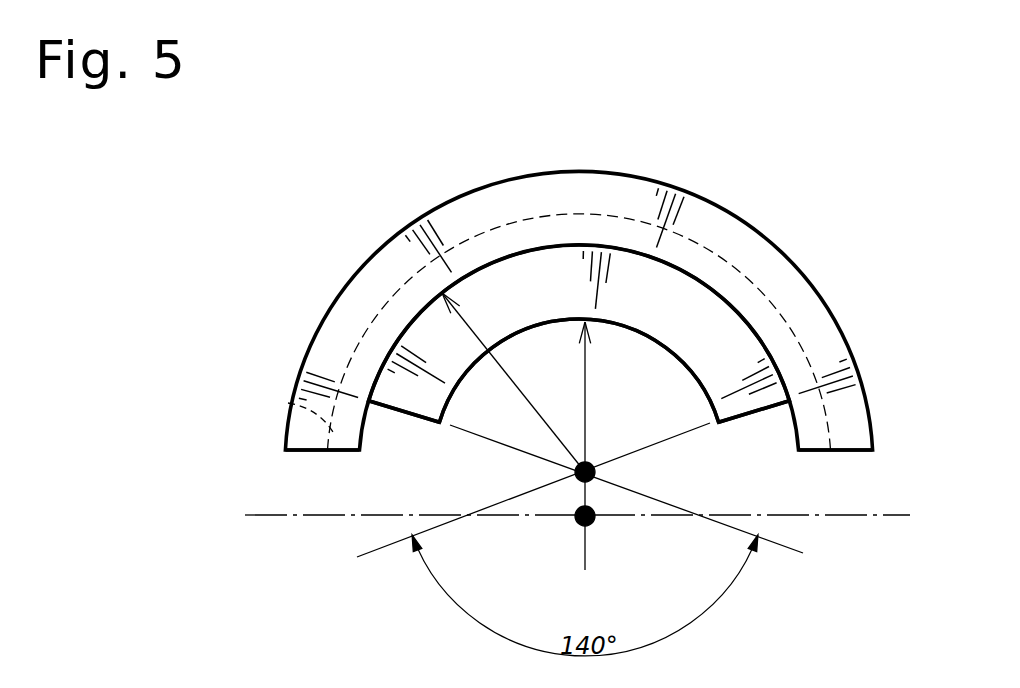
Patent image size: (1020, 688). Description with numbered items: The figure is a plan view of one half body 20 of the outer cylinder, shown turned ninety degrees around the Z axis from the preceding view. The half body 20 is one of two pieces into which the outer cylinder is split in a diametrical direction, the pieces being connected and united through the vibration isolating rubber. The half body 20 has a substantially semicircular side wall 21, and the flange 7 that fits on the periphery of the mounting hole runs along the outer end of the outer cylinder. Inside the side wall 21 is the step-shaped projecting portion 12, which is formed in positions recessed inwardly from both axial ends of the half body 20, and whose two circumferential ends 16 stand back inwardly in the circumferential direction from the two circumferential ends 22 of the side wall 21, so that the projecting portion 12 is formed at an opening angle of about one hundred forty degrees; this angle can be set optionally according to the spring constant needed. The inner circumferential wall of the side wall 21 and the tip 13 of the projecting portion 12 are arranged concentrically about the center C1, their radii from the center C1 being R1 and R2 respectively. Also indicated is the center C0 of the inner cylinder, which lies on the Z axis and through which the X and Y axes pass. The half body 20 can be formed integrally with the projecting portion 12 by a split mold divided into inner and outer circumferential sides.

The half body 20 is at (483, 190).
The flange 7 is at (360, 284).
The projecting portion 12 is at (682, 282).
The tip of the projecting portion 13 is at (688, 372).
The circumferential end of the projecting portion 16 is at (380, 403).
The side wall 21 is at (290, 403).
The circumferential end of the side wall 22 is at (343, 452).
The radius of the inner circumferential wall of the side wall R1 is at (513, 382).
The radius of the tip of the projecting portion R2 is at (606, 397).
The center C1 is at (589, 468).
The center of the inner cylinder C0 is at (577, 522).